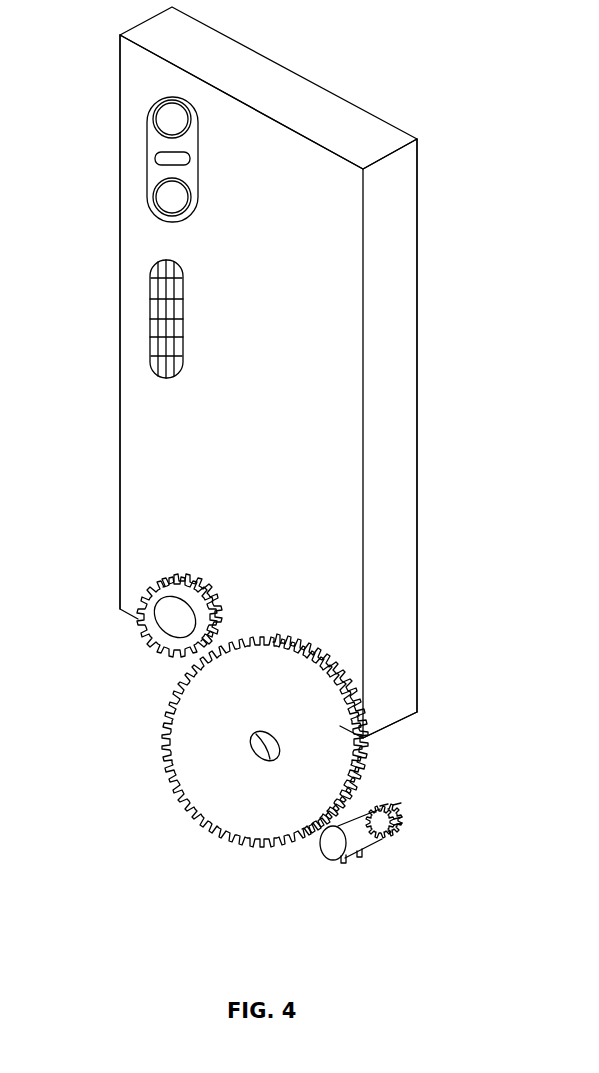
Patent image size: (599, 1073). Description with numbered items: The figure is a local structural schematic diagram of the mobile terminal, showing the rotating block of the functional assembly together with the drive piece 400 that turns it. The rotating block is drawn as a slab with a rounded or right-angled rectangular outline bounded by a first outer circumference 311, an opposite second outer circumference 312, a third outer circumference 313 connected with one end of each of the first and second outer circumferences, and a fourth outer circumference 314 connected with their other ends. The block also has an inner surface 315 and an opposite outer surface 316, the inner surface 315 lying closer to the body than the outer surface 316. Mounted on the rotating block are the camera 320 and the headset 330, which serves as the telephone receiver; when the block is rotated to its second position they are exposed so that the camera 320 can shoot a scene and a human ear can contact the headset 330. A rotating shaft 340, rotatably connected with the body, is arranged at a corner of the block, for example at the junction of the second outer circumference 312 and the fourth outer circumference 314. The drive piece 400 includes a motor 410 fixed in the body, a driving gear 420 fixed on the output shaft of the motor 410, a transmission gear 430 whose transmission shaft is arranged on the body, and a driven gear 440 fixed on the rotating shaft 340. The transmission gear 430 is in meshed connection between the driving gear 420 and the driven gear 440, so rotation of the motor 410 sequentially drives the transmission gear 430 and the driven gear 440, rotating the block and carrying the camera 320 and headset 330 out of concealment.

The first outer circumference 311 is at (398, 392).
The second outer circumference 312 is at (118, 468).
The third outer circumference 313 is at (260, 72).
The fourth outer circumference 314 is at (387, 730).
The inner surface 315 is at (327, 277).
The outer surface 316 is at (417, 212).
The camera 320 is at (168, 170).
The headset 330 is at (168, 330).
The rotating shaft 340 is at (177, 615).
The drive piece 400 is at (187, 781).
The motor 410 is at (335, 842).
The driving gear 420 is at (382, 808).
The transmission gear 430 is at (212, 732).
The driven gear 440 is at (178, 638).